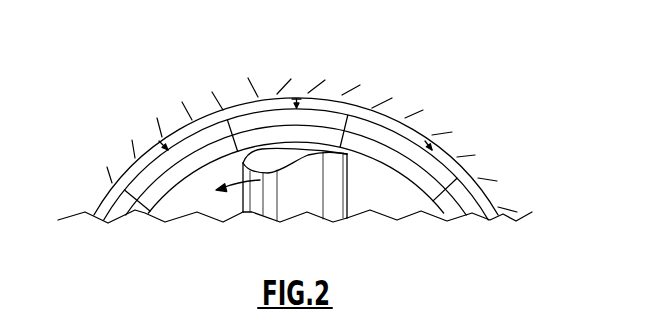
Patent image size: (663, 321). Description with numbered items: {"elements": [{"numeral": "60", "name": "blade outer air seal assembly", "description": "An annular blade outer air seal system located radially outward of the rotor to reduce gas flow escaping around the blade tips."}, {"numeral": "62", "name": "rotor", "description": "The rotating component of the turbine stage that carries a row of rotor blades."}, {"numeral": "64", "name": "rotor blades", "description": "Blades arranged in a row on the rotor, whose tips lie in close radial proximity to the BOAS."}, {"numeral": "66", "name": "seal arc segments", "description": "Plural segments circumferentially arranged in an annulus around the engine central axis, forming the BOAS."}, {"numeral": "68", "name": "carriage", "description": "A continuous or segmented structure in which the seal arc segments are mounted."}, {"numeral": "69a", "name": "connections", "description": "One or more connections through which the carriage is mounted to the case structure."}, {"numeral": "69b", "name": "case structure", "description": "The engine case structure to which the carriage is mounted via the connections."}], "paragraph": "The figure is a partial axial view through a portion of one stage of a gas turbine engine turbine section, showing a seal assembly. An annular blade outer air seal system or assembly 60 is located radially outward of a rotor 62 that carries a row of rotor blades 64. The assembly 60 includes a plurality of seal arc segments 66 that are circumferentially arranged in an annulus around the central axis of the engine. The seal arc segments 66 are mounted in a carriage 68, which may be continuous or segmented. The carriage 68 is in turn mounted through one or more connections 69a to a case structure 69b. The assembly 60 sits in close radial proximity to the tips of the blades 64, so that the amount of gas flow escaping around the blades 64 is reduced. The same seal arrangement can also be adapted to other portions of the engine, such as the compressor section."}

The outer casing 60 is at (437, 172).
The cylindrical member 62 is at (351, 208).
The base of cylindrical member 64 is at (243, 208).
The inner liner 66 is at (337, 127).
The intermediate layer 68 is at (313, 110).
The first joint marker 69a is at (292, 99).
The second joint marker 69b is at (442, 150).